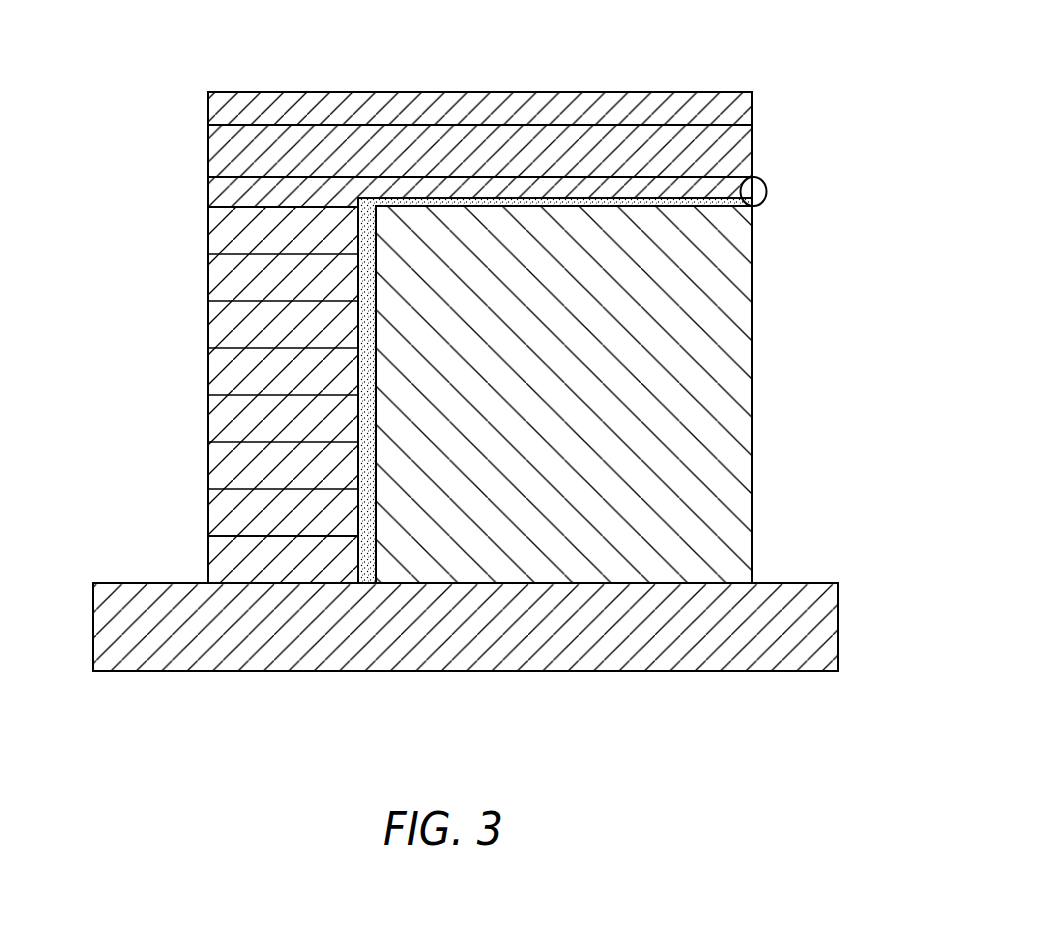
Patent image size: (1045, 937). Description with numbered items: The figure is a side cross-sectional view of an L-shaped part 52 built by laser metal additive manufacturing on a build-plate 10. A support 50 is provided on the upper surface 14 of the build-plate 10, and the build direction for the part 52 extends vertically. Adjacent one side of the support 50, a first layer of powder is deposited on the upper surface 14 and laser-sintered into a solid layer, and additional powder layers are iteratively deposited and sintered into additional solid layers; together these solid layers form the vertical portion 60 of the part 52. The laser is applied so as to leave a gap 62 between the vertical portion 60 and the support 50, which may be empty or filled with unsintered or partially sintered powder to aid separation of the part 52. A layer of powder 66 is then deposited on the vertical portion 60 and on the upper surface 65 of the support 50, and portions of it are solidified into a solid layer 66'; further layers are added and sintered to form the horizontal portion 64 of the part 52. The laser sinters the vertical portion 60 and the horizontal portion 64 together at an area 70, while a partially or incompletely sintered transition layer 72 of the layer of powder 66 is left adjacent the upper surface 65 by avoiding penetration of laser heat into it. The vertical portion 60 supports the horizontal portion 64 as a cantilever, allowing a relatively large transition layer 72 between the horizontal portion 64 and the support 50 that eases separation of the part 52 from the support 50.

The build-plate 10 is at (850, 637).
The upper surface 14 is at (798, 583).
The support 50 is at (760, 436).
The L-shaped part 52 is at (760, 133).
The vertical portion 60 is at (110, 207).
The gap 62 is at (363, 582).
The horizontal portion 64 is at (110, 92).
The upper surface 65 is at (668, 206).
The layer of powder 66 is at (795, 191).
The solid layer 66' is at (452, 176).
The area 70 is at (258, 207).
The transition layer 72 is at (699, 199).